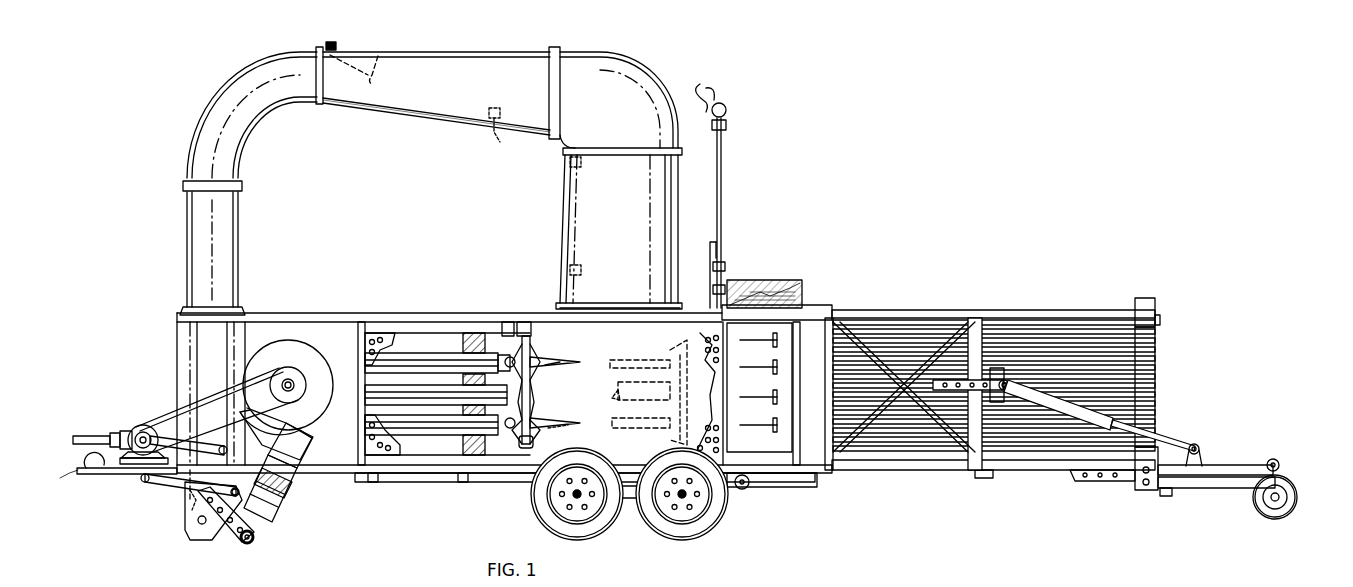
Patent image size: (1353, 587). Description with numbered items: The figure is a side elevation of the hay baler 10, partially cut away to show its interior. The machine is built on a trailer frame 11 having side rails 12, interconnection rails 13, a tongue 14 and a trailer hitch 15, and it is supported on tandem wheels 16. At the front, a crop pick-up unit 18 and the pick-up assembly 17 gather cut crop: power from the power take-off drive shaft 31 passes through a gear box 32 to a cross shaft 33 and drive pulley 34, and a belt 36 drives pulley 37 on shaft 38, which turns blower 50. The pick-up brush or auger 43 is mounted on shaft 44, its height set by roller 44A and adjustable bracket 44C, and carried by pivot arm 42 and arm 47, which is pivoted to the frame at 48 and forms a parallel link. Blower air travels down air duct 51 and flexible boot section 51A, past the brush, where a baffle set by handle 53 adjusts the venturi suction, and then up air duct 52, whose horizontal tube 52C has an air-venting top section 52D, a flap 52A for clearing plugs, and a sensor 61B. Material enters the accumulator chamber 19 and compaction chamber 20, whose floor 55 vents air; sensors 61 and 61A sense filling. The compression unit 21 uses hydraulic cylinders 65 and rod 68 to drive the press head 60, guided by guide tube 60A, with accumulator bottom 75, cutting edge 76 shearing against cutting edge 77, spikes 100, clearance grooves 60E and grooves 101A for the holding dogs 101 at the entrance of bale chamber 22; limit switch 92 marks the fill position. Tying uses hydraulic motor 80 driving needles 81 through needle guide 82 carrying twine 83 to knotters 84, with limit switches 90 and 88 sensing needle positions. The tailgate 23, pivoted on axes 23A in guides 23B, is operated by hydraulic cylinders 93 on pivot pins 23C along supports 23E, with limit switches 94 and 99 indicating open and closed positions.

The hay baler 10 is at (940, 168).
The trailer frame 11 is at (915, 493).
The side rails 12 is at (872, 468).
The interconnection rails 13 is at (372, 482).
The tongue 14 is at (135, 466).
The trailer hitch 15 is at (76, 472).
The tandem wheels 16 is at (630, 510).
The pick-up assembly 17 is at (168, 546).
The crop pick-up unit 18 is at (265, 308).
The accumulator chamber 19 is at (555, 220).
The compaction chamber 20 is at (600, 322).
The compression unit 21 is at (416, 330).
The bale chamber 22 is at (898, 310).
The tailgate 23 is at (1200, 490).
The pivot axes 23A is at (1146, 486).
The guides 23B is at (1101, 488).
The pivot pins 23C is at (1006, 378).
The supports 23E is at (958, 378).
The power take-off drive shaft 31 is at (106, 434).
The gear box 32 is at (146, 424).
The cross shaft 33 is at (116, 448).
The drive pulley 34 is at (126, 430).
The belt 36 is at (172, 402).
The pulley 37 is at (290, 380).
The shaft 38 is at (295, 370).
The pivot arm 42 is at (185, 452).
The pick-up brush or pick-up auger 43 is at (205, 540).
The shaft 44 is at (228, 540).
The roller 44A is at (256, 540).
The adjustable bracket 44C is at (238, 550).
The arm 47 is at (188, 505).
The pivot connection 48 is at (150, 484).
The blower 50 is at (276, 350).
The air duct 51 is at (305, 460).
The flexible boot section 51A is at (282, 498).
The air duct 52 is at (187, 353).
The flap 52A is at (370, 75).
The tube 52C is at (415, 105).
The top section 52D is at (445, 52).
The air baffle handle 53 is at (272, 514).
The floor 55 is at (720, 443).
The press head 60 is at (534, 438).
The guide tube 60A is at (436, 407).
The clearance grooves 60E is at (560, 434).
The sensor 61 is at (566, 268).
The sensor 61A is at (568, 178).
The sensor 61B is at (500, 142).
The hydraulic cylinder 65 is at (446, 346).
The cylinder rod 68 is at (512, 428).
The accumulator bottom 75 is at (495, 332).
The cutting edge 76 is at (530, 330).
The cutting edge 77 is at (680, 343).
The hydraulic motor 80 is at (726, 106).
The needles 81 is at (722, 163).
The needle guide 82 is at (726, 266).
The twine 83 is at (706, 86).
The knotters 84 is at (748, 490).
The limit switch 88 is at (727, 126).
The limit switch 90 is at (712, 240).
The limit switch 92 is at (512, 322).
The hydraulic cylinders 93 is at (1060, 410).
The limit switch 94 is at (1164, 498).
The limit switch 99 is at (1162, 318).
The spikes 100 is at (540, 358).
The holding dogs 101 is at (755, 423).
The grooves 101A is at (544, 393).